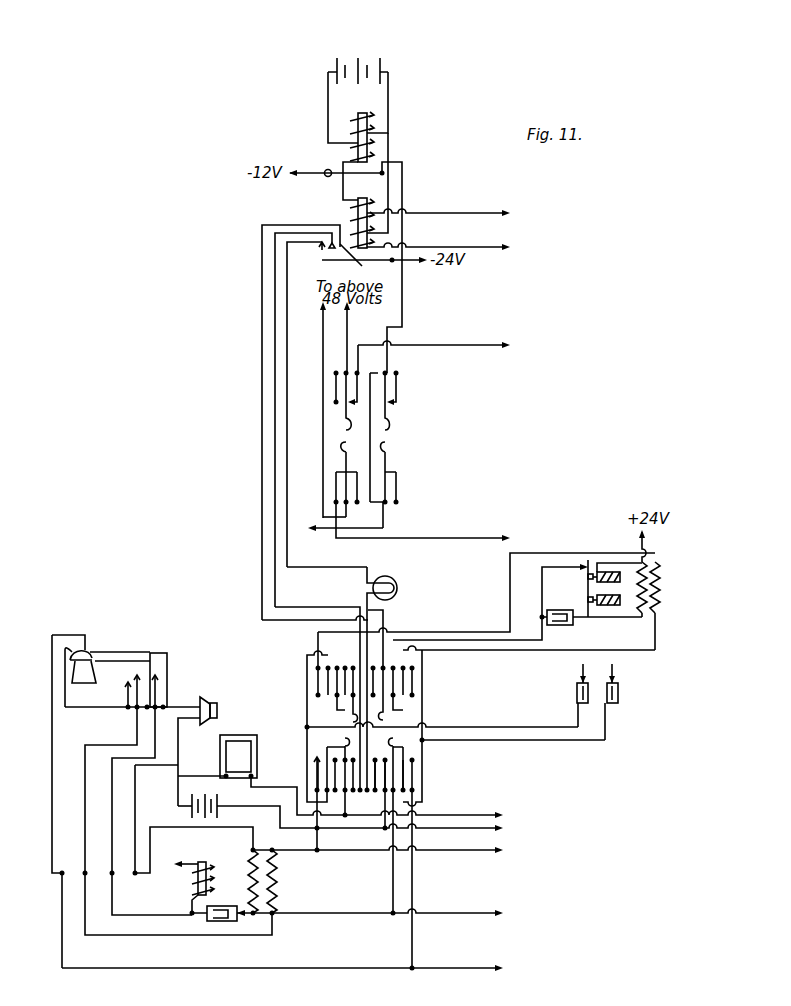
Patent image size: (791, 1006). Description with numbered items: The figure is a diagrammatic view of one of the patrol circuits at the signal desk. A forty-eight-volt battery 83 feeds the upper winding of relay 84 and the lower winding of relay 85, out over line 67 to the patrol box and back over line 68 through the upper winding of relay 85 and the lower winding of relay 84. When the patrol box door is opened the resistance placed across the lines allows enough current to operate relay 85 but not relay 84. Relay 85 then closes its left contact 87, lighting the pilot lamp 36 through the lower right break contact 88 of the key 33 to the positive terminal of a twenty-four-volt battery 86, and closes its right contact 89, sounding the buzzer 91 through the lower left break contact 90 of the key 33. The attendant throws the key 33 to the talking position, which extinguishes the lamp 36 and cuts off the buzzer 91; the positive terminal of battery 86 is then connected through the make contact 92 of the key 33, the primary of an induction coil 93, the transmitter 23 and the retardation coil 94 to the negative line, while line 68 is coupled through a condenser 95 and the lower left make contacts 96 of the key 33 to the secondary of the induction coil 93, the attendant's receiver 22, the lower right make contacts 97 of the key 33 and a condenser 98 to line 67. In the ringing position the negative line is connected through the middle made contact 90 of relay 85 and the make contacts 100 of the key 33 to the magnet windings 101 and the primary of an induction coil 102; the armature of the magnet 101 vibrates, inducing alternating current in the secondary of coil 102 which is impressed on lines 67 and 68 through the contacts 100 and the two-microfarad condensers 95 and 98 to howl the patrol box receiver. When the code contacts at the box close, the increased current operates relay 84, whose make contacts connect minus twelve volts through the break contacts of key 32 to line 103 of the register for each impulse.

The 48-volt battery 83 is at (358, 64).
The relay 84 is at (370, 131).
The relay 85 is at (358, 222).
The line 68 is at (492, 213).
The line 67 is at (505, 248).
The left contact of relay 85 87 is at (322, 247).
The lower left break contact of key 33 90 is at (322, 260).
The right contact of relay 85 89 is at (361, 264).
The key 32 is at (413, 377).
The line 103 is at (323, 531).
The pilot lamp 36 is at (398, 585).
The magnet windings 101 is at (598, 570).
The induction coil 102 is at (660, 590).
The receiver 22 is at (90, 655).
The transmitter 23 is at (210, 700).
The buzzer 91 is at (234, 737).
The 24-volt battery 86 is at (197, 787).
The retardation coil 94 is at (224, 857).
The induction coil 93 is at (278, 891).
The make contacts of key 33 100 is at (330, 707).
The key 33 is at (285, 705).
The lower left make contacts of key 33 96 is at (318, 760).
The make contact of key 33 92 is at (387, 759).
The lower right make contacts of key 33 97 is at (405, 765).
The condenser 95 is at (577, 689).
The condenser 98 is at (618, 696).
The lower right break contact of key 33 88 is at (383, 766).